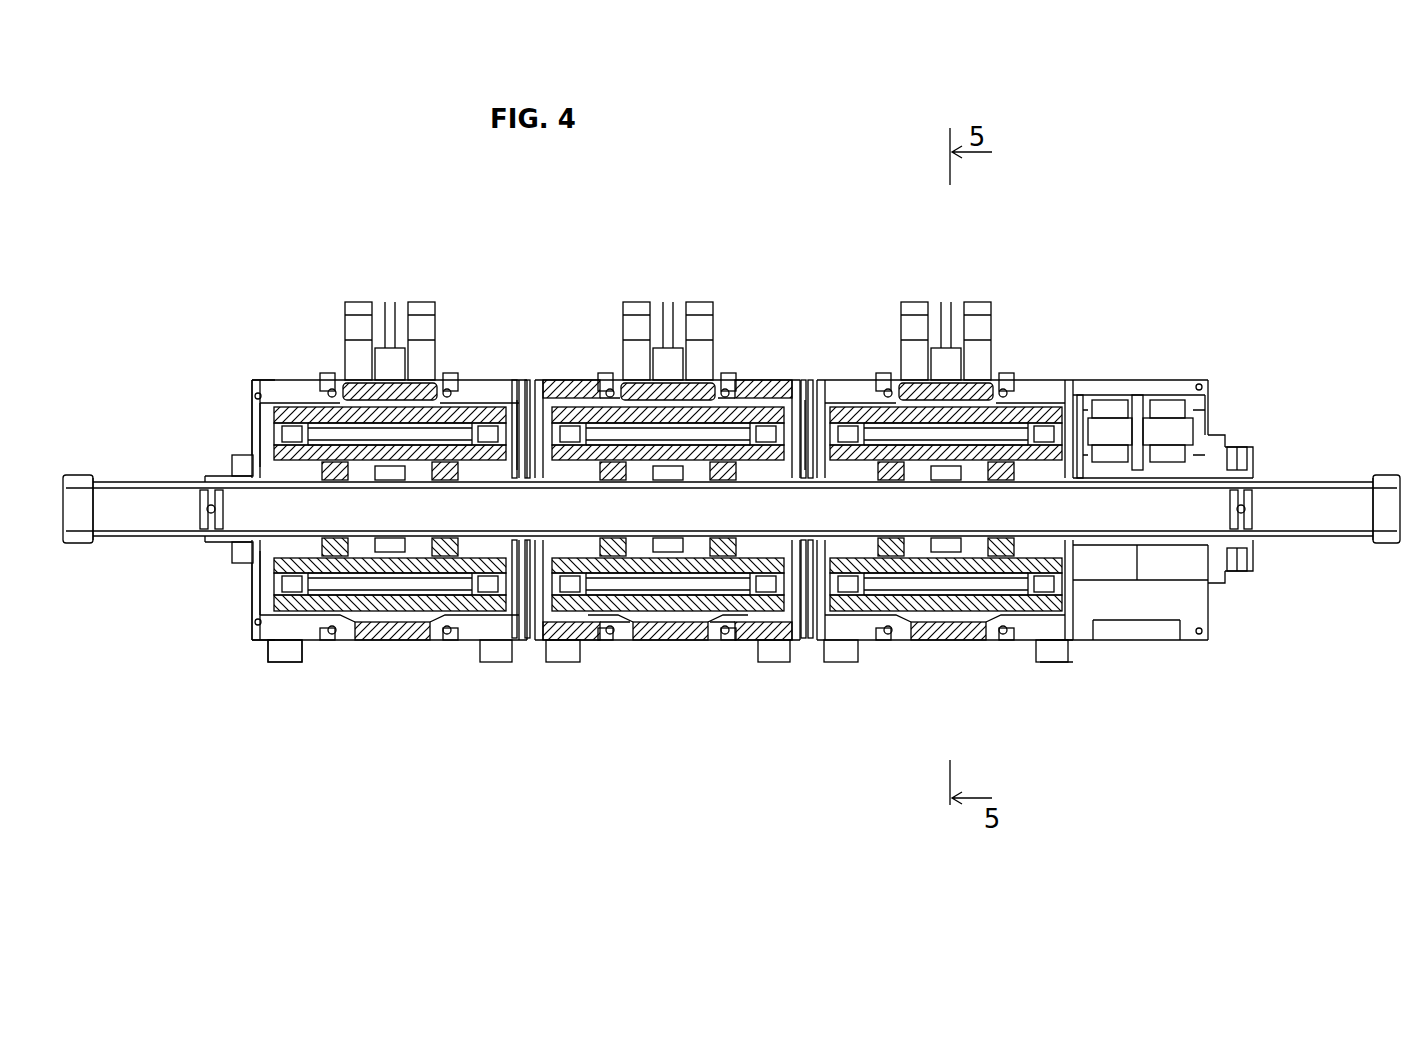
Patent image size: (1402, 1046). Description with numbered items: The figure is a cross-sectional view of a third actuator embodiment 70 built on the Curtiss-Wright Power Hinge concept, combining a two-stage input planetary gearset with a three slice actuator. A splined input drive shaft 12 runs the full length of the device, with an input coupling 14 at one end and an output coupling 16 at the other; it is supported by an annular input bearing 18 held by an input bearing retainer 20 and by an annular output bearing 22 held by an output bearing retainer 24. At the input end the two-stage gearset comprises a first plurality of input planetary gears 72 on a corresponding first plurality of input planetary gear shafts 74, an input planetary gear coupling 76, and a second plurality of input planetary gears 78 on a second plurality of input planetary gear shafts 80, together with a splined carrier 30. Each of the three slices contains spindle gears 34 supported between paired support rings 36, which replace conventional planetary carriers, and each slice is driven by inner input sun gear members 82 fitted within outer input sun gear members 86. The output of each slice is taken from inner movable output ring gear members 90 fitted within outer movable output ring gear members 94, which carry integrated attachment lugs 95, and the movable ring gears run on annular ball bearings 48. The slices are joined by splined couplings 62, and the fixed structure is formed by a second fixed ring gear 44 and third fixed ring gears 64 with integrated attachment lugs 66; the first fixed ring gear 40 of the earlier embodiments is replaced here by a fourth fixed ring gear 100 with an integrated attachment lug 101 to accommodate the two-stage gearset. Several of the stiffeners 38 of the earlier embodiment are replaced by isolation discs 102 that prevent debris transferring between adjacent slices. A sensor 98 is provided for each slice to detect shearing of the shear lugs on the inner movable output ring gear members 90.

The splined input drive shaft 12 is at (1215, 522).
The input coupling 14 is at (1310, 505).
The output coupling 16 is at (150, 495).
The annular input bearing 18 is at (1248, 452).
The input bearing retainer 20 is at (1228, 444).
The annular output bearing 22 is at (240, 462).
The output bearing retainer 24 is at (253, 418).
The splined carrier 30 is at (1082, 480).
The spindle gears 34 is at (318, 405).
The support rings 36 is at (330, 548).
The stiffener 38 is at (1104, 400).
The first fixed ring gear 40 is at (286, 655).
The second fixed ring gear 44 is at (266, 382).
The annular ball bearings 48 is at (333, 642).
The splined couplings 62 is at (522, 482).
The third fixed ring gears 64 is at (498, 382).
The integrated attachment lugs 66 is at (497, 662).
The third actuator embodiment 70 is at (1120, 194).
The first plurality of input planetary gears 72 is at (1190, 405).
The first plurality of input planetary gear shafts 74 is at (1214, 435).
The input planetary gear coupling 76 is at (1138, 480).
The second plurality of input planetary gears 78 is at (1108, 425).
The second plurality of input planetary gear shafts 80 is at (1166, 425).
The inner input sun gear members 82 is at (320, 568).
The outer input sun gear members 86 is at (392, 470).
The inner movable output ring gear members 90 is at (434, 390).
The outer movable output ring gear members 94 is at (447, 375).
The integrated attachment lugs 95 is at (390, 302).
The sensor 98 is at (422, 310).
The fourth fixed ring gear 100 is at (1083, 392).
The integrated attachment lug 101 is at (1080, 655).
The isolation discs 102 is at (517, 378).